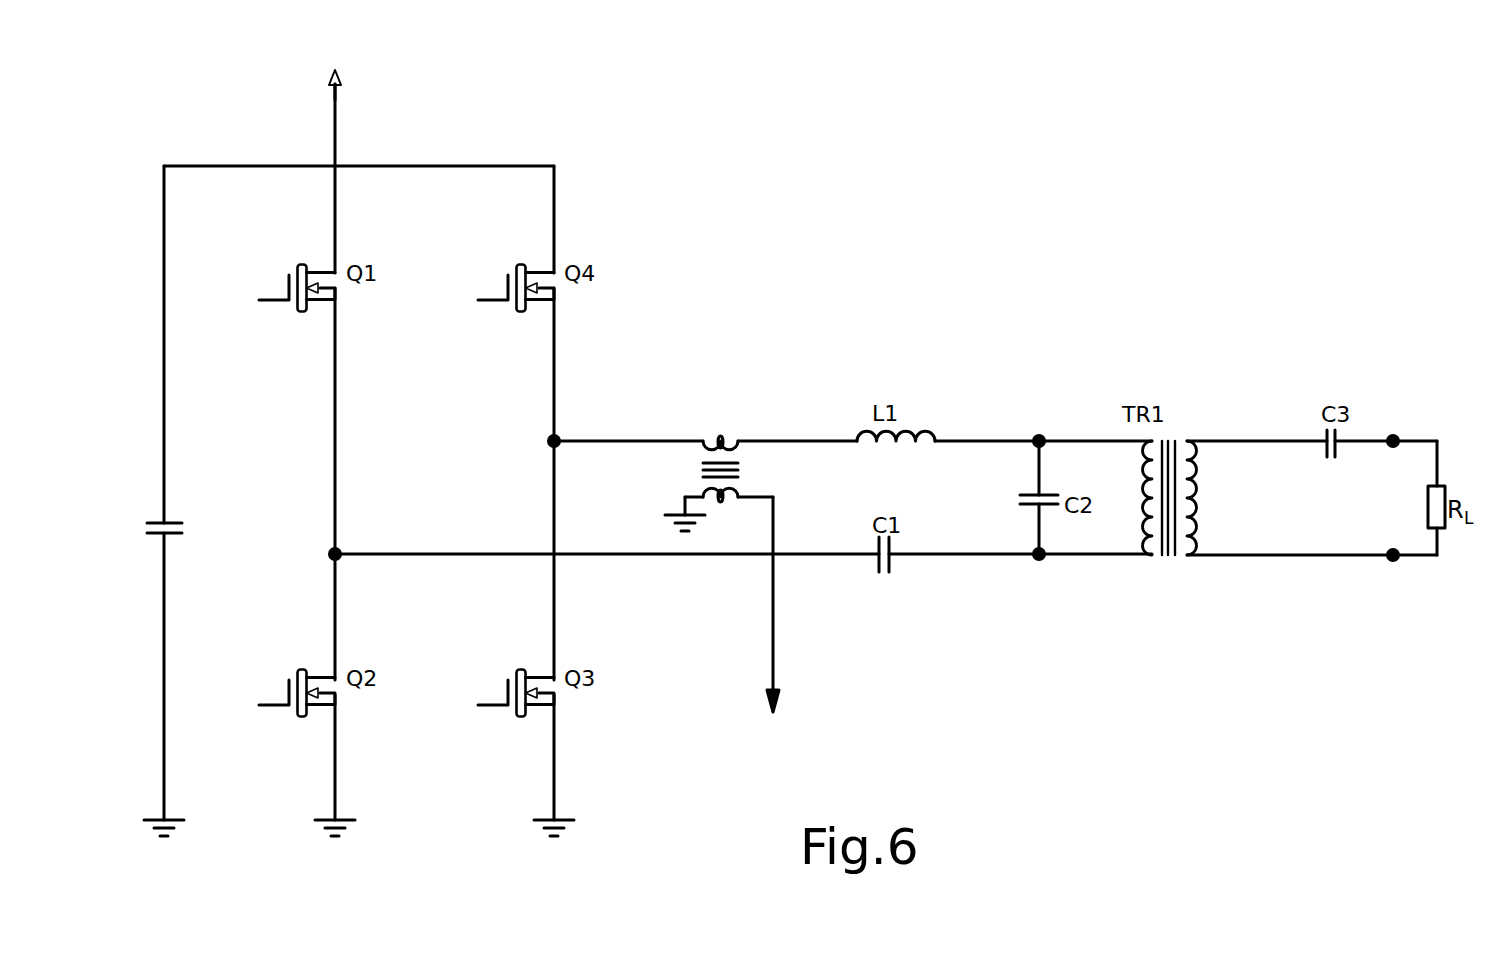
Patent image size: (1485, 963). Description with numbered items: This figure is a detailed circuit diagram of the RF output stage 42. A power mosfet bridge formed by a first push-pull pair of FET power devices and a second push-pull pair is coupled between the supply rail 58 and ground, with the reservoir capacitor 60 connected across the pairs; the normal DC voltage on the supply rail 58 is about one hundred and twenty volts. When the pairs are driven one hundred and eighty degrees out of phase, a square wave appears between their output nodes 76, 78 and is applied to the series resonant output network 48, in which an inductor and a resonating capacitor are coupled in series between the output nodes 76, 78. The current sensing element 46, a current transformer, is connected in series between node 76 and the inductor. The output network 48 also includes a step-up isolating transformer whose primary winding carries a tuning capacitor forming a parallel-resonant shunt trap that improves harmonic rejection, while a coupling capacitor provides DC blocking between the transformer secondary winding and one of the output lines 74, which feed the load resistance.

The RF output stage 42 is at (1033, 145).
The current sensing element 46 is at (742, 469).
The series resonant output network 48 is at (1017, 657).
The supply rail 58 is at (335, 128).
The reservoir capacitor 60 is at (163, 521).
The output lines 74 is at (1363, 441).
The output node of first power mosfet pair 76 is at (556, 439).
The output node of second power mosfet pair 78 is at (338, 551).